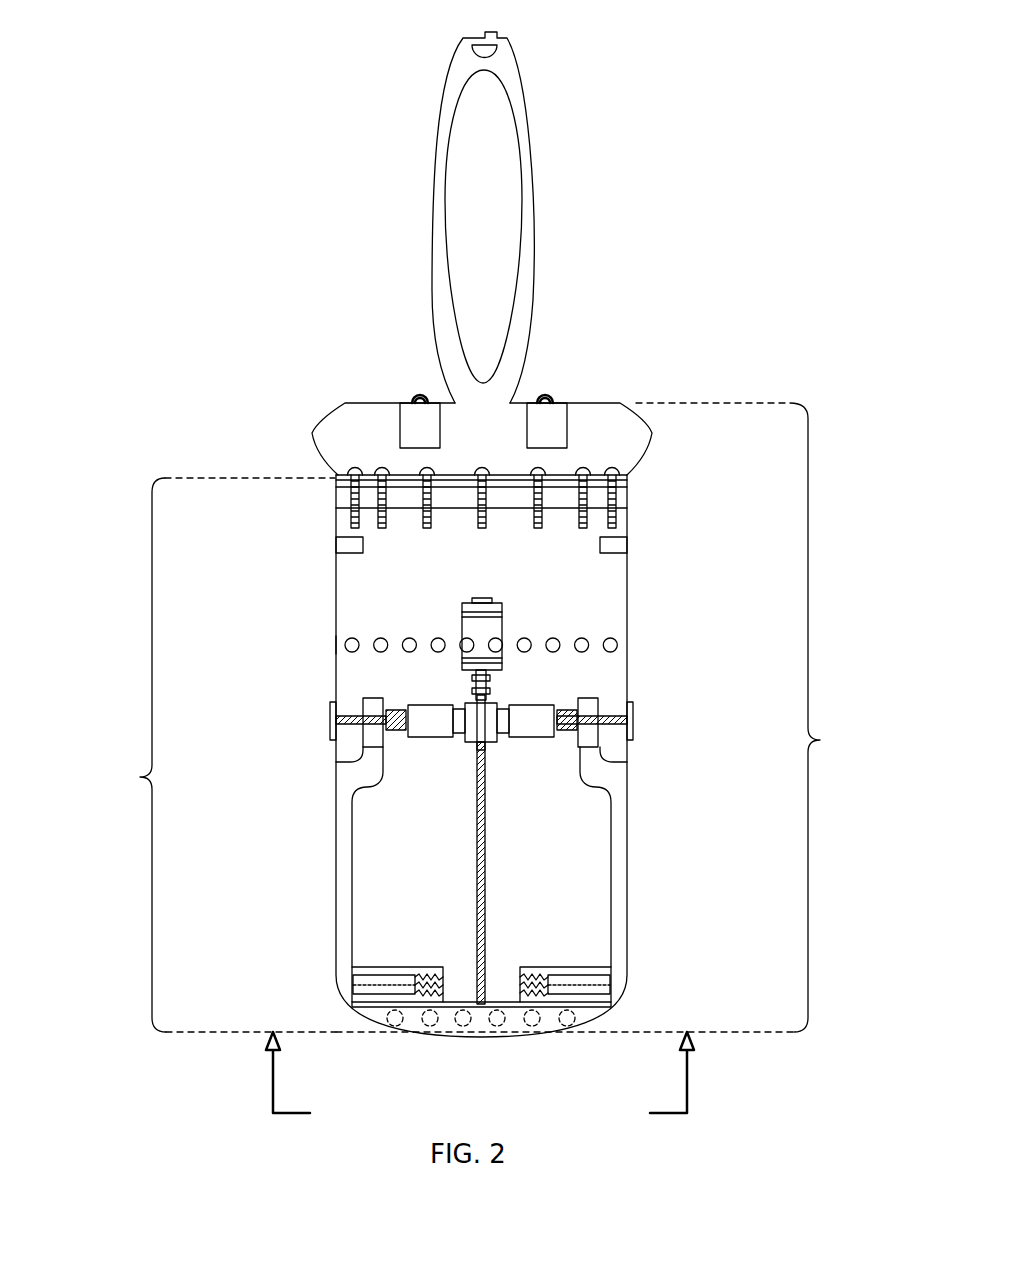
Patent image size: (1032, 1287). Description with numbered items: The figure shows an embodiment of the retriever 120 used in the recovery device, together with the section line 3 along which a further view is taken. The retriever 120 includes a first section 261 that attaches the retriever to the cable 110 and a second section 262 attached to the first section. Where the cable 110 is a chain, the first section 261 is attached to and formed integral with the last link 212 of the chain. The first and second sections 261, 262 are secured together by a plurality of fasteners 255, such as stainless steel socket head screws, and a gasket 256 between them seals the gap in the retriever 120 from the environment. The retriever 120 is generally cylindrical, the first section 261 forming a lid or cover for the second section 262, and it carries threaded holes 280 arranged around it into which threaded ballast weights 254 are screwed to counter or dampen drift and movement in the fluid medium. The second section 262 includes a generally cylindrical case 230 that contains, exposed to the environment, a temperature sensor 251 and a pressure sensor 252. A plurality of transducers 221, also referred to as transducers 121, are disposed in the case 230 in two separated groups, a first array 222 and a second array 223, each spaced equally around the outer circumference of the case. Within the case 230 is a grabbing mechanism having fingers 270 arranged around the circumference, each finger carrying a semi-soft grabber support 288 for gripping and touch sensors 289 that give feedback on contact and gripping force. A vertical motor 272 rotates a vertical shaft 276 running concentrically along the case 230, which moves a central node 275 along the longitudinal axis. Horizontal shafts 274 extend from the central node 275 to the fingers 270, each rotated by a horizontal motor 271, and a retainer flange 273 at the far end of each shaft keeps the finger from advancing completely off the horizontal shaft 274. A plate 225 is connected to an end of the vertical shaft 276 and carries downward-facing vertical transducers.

The cable 110 is at (537, 140).
The last link 212 is at (437, 197).
The threaded ballast weight 254 is at (417, 393).
The threaded holes 280 is at (400, 432).
The first section 261 is at (655, 437).
The fasteners 255 is at (312, 433).
The gasket 256 is at (627, 480).
The pressure sensor 252 is at (336, 547).
The temperature sensor 251 is at (627, 547).
The case 230 is at (336, 580).
The vertical motor 272 is at (502, 622).
The transducers 221 is at (383, 637).
The first array 222 is at (326, 650).
The horizontal shaft 274 is at (332, 700).
The horizontal motor 271 is at (420, 703).
The central node 275 is at (472, 743).
The retainer flange 273 is at (362, 727).
The vertical shaft 276 is at (487, 847).
The fingers 270 is at (345, 865).
The transducers 121 is at (397, 1030).
The grabber support 288 is at (443, 965).
The second array 223 is at (585, 1018).
The plate 225 is at (470, 1005).
The touch sensor 289 is at (450, 998).
The second section 262 is at (211, 755).
The retriever 120 is at (754, 717).
The section line 3- 3 is at (482, 1082).